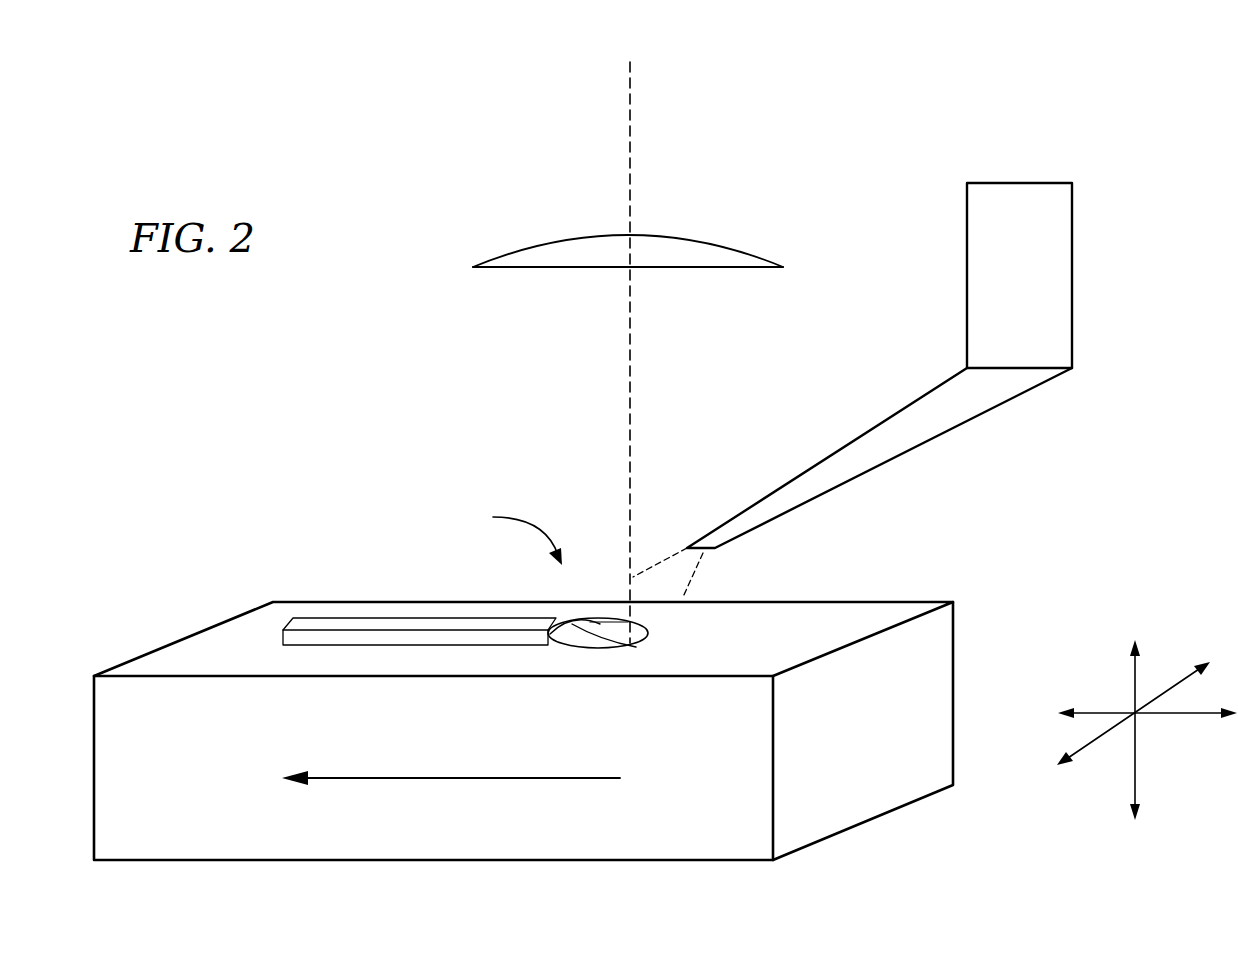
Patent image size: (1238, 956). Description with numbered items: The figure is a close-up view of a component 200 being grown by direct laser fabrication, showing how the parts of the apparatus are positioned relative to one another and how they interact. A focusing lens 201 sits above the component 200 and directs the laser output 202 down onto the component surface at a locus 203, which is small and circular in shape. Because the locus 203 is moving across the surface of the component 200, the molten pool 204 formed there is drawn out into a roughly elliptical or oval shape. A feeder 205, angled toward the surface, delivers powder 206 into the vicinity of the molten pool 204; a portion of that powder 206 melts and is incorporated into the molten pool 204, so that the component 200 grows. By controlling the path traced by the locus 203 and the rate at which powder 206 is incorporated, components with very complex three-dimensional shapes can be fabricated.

The component 200 is at (517, 777).
The focusing lens 201 is at (528, 248).
The laser output 202 is at (630, 142).
The locus 203 is at (610, 618).
The molten pool 204 is at (502, 531).
The feeder 205 is at (1041, 265).
The powder 206 is at (697, 578).